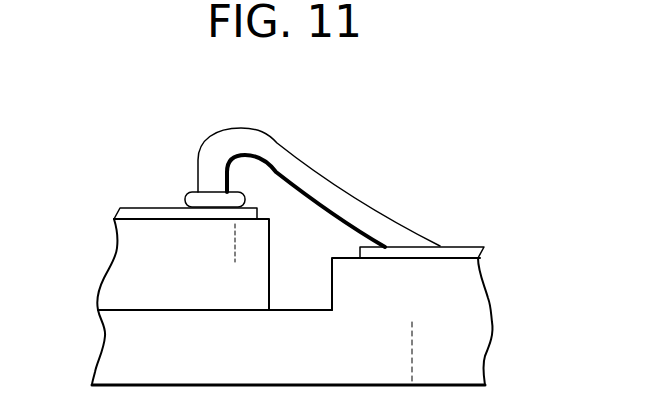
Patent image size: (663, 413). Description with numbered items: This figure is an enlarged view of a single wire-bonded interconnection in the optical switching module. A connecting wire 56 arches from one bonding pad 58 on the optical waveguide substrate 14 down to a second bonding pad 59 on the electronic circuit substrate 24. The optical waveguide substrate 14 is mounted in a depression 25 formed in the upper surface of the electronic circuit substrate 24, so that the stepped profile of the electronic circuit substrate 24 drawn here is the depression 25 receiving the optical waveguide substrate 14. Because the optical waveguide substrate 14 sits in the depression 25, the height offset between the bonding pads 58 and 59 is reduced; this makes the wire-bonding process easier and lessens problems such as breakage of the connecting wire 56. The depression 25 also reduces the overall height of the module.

The optical waveguide substrate 14 is at (120, 258).
The electronic circuit substrate 24 is at (483, 307).
The depression 25 is at (323, 238).
The connecting wire 56 is at (278, 148).
The bonding pad 58 is at (147, 208).
The bonding pad 59 is at (468, 248).